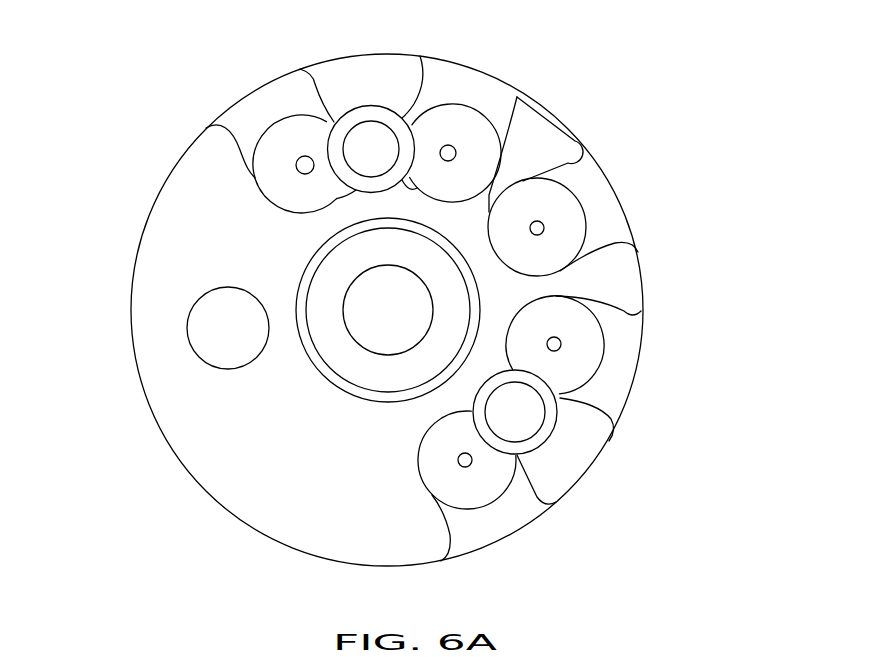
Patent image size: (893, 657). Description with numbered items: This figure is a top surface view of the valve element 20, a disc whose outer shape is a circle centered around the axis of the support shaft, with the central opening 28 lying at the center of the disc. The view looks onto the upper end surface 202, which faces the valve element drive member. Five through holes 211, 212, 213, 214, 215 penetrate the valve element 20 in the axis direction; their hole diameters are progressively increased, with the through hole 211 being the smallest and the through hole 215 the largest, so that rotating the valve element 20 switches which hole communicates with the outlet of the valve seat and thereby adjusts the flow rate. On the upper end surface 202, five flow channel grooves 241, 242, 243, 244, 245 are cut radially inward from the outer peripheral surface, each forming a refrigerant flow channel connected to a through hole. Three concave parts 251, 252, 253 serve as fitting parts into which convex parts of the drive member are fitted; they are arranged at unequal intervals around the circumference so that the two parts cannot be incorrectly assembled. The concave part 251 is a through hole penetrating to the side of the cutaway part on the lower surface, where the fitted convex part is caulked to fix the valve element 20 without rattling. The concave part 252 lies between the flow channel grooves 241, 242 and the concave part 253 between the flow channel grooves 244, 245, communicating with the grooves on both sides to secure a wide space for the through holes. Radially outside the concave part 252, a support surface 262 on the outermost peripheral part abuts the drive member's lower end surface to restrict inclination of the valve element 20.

The valve element 20 is at (603, 100).
The upper end surface 202 is at (305, 455).
The through hole 211 is at (467, 467).
The through hole 212 is at (561, 345).
The through hole 213 is at (544, 226).
The through hole 214 is at (449, 145).
The through hole 215 is at (299, 159).
The flow channel groove 241 is at (540, 513).
The flow channel groove 242 is at (648, 310).
The flow channel groove 243 is at (578, 150).
The flow channel groove 244 is at (517, 97).
The flow channel groove 245 is at (301, 70).
The concave part 251 is at (187, 321).
The concave part 252 is at (557, 417).
The concave part 253 is at (396, 116).
The support surface 262 is at (385, 95).
The central hole 28 is at (347, 327).